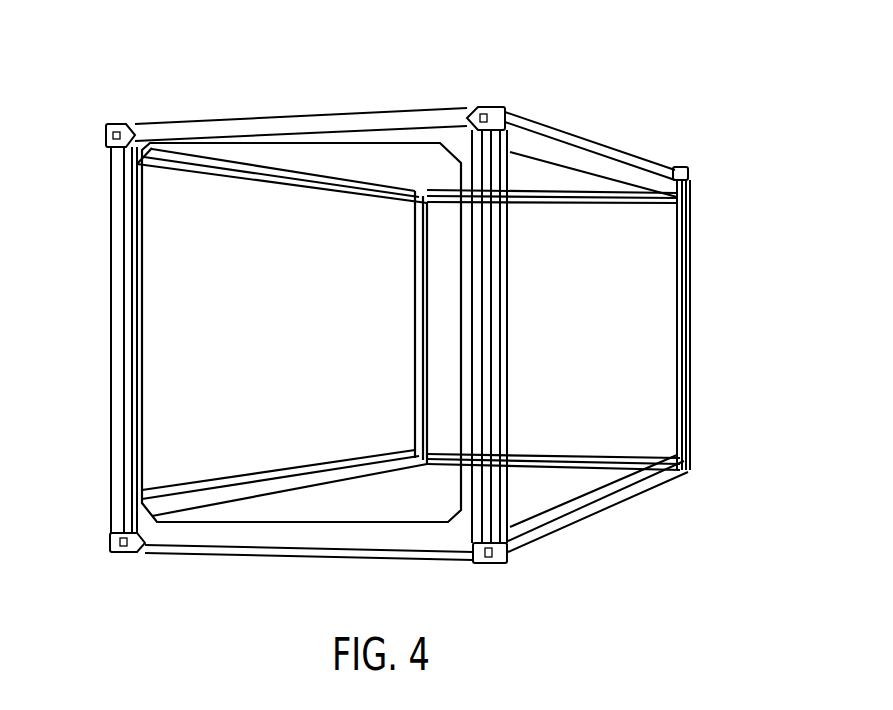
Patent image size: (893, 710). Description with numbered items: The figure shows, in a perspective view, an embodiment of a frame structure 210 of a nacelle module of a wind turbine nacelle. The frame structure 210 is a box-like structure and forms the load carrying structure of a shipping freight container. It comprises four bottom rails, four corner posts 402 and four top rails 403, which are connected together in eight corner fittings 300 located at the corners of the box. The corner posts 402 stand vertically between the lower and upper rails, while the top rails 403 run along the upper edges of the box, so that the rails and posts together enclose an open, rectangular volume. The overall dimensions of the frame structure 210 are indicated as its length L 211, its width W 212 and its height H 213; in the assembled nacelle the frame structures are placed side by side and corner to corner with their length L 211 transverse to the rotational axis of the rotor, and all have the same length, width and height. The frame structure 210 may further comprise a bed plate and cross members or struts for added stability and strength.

The corner fitting 300 is at (125, 122).
The top rail 403 is at (296, 112).
The frame structure 210 is at (578, 135).
The height H 213 is at (692, 353).
The corner post 402 is at (128, 420).
The width W 212 is at (228, 545).
The length L 211 is at (557, 517).